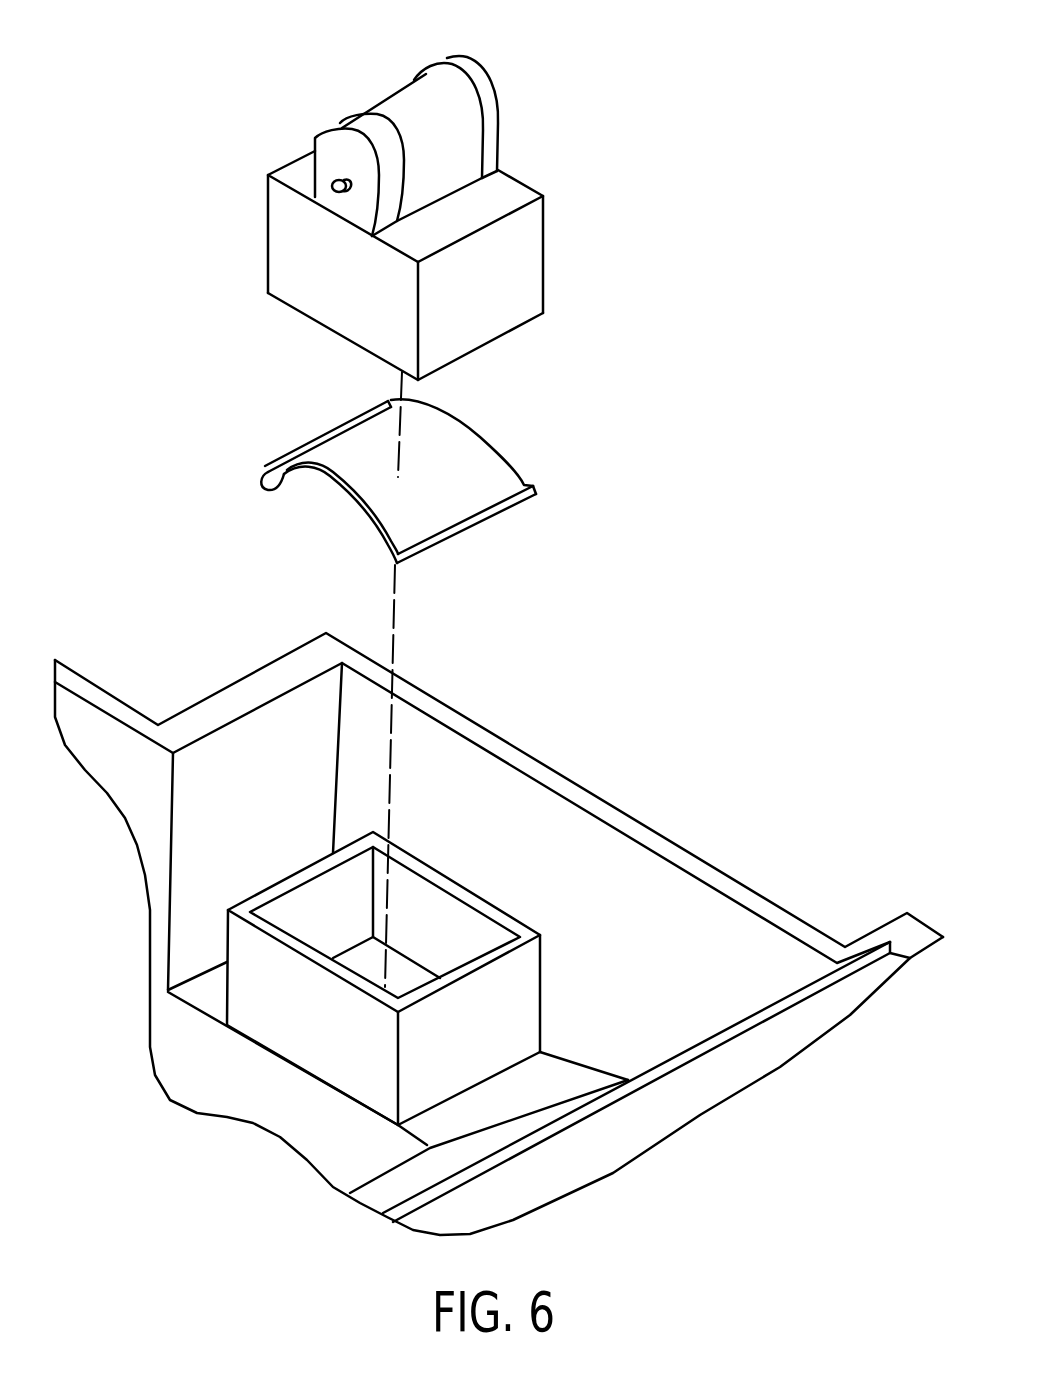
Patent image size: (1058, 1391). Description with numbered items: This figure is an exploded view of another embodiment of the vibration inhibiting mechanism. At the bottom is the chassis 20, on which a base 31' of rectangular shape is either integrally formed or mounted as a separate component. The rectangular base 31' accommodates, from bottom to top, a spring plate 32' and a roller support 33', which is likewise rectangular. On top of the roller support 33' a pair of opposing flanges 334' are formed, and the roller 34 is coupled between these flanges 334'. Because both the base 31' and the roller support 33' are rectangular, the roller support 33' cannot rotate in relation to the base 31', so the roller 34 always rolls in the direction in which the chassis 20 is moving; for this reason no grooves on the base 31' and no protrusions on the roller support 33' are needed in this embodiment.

The chassis 20 is at (645, 867).
The base 31' is at (437, 978).
The spring plate 32' is at (441, 481).
The roller support 33' is at (453, 265).
The roller 34 is at (453, 118).
The flanges 334' is at (385, 122).